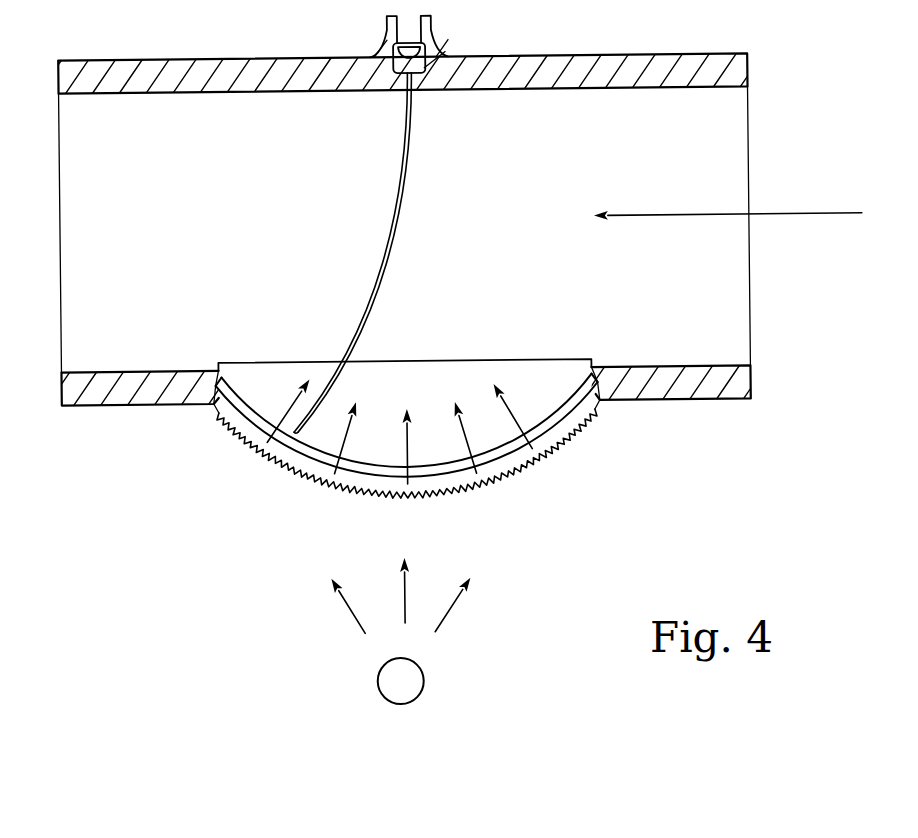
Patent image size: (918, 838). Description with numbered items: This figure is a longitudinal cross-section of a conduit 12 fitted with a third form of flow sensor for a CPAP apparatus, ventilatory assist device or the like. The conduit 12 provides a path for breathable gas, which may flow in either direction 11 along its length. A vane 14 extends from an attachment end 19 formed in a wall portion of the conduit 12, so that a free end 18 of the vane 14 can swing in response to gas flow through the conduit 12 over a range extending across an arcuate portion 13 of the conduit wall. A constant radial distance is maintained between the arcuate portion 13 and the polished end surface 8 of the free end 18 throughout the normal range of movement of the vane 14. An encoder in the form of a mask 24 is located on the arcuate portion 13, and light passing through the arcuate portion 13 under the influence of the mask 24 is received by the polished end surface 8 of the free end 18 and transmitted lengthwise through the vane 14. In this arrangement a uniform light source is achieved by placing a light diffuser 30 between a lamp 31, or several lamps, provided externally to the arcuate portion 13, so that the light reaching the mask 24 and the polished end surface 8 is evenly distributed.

The conduit 12 is at (629, 52).
The direction of gas flow 11 is at (787, 217).
The attachment end 19 is at (414, 108).
The vane 14 is at (397, 223).
The polished end surface 8 is at (290, 422).
The free end 18 is at (315, 407).
The mask 24 is at (570, 447).
The light diffuser 30 is at (509, 471).
The arcuate portion 13 is at (224, 502).
The lamp 31 is at (418, 690).